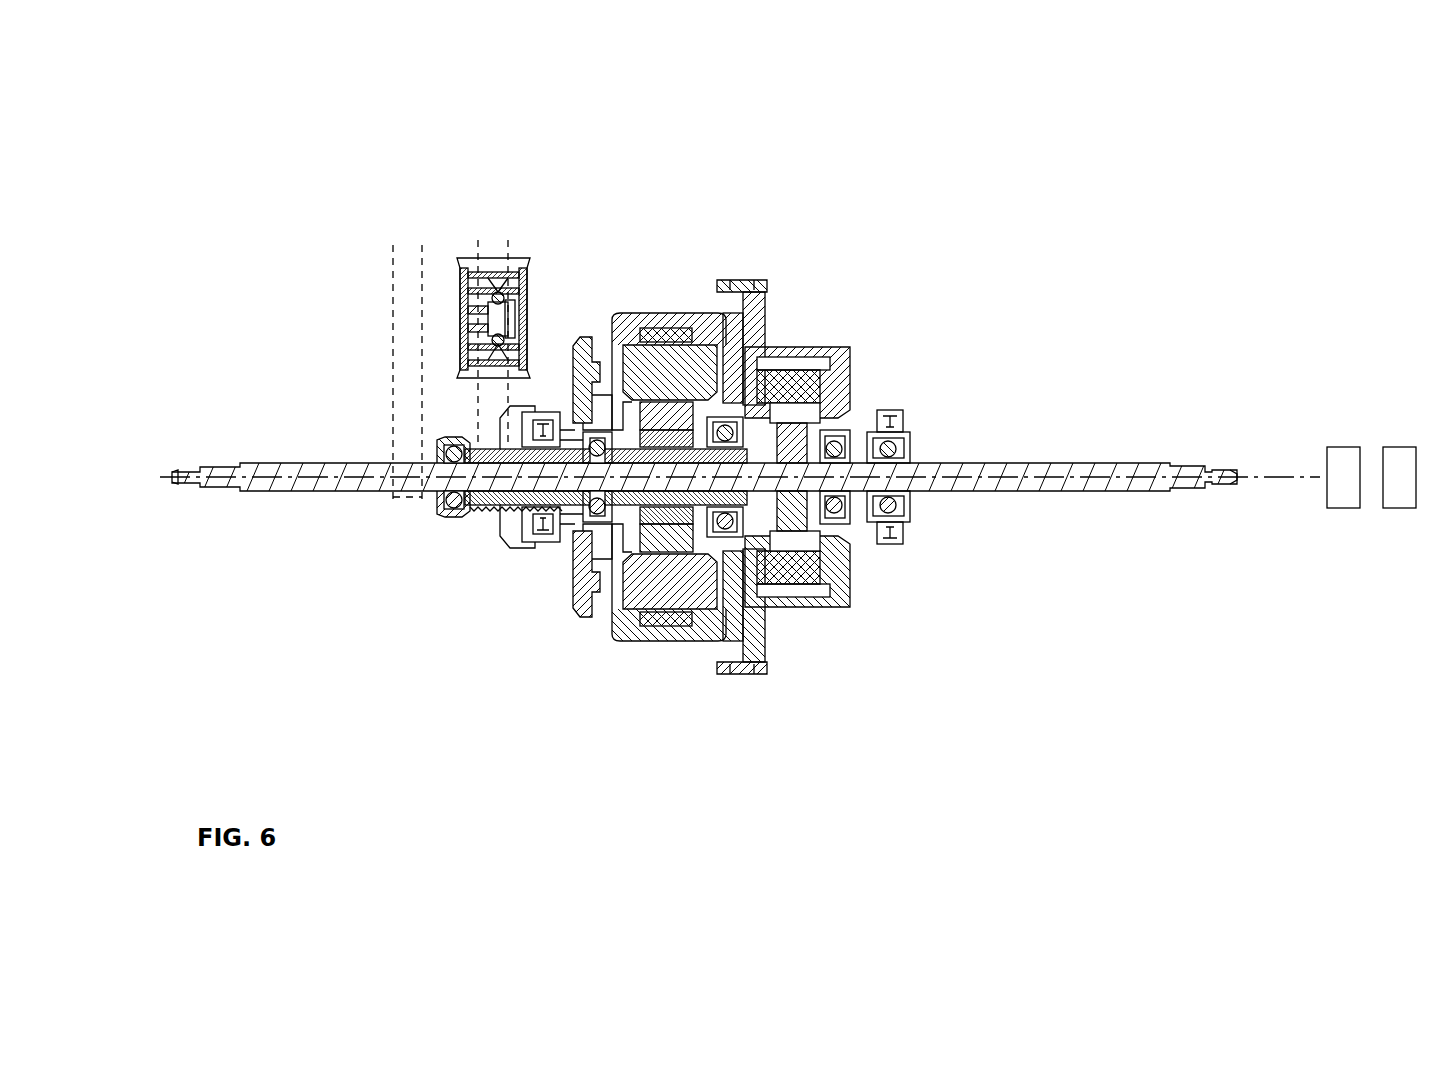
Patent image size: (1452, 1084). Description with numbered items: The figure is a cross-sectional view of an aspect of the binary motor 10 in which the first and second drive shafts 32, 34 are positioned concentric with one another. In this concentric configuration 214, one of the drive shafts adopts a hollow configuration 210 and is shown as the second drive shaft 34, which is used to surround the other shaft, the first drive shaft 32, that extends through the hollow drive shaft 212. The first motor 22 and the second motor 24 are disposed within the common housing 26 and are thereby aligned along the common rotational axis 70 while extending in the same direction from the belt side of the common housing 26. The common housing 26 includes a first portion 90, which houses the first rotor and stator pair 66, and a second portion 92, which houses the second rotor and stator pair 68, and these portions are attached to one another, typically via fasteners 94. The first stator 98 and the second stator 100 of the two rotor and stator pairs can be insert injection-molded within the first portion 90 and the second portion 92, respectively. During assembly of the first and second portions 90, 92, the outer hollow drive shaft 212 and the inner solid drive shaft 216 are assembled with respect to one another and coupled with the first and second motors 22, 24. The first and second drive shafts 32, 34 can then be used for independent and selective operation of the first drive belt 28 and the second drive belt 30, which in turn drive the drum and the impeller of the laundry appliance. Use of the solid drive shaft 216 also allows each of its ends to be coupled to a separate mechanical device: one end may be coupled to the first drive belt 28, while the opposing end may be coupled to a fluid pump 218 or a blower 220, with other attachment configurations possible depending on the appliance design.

The binary motor 10 is at (935, 296).
The first motor 22 is at (812, 332).
The second motor 24 is at (660, 312).
The common housing 26 is at (754, 262).
The first drive belt 28 is at (400, 296).
The second drive belt 30 is at (505, 400).
The first drive shaft 32 is at (215, 468).
The second drive shaft 34 is at (605, 646).
The first rotor and stator pair 66 is at (878, 393).
The second rotor and stator pair 68 is at (670, 640).
The common rotational axis 70 is at (1258, 478).
The first portion 90 is at (832, 622).
The second portion 92 is at (607, 326).
The fasteners 94 is at (765, 673).
The first stator 98 is at (830, 567).
The second stator 100 is at (780, 621).
The hollow configuration 210 is at (528, 628).
The hollow drive shaft 212 is at (527, 513).
The concentric configuration 214 is at (350, 436).
The solid drive shaft 216 is at (318, 493).
The fluid pump 218 is at (1340, 442).
The blower 220 is at (1398, 442).